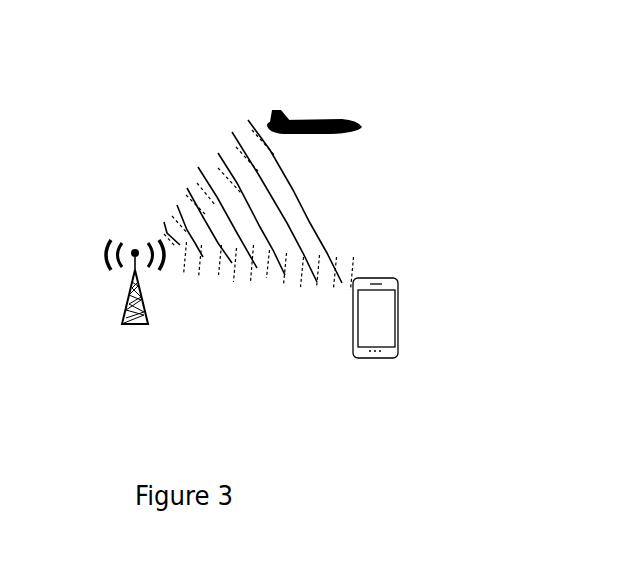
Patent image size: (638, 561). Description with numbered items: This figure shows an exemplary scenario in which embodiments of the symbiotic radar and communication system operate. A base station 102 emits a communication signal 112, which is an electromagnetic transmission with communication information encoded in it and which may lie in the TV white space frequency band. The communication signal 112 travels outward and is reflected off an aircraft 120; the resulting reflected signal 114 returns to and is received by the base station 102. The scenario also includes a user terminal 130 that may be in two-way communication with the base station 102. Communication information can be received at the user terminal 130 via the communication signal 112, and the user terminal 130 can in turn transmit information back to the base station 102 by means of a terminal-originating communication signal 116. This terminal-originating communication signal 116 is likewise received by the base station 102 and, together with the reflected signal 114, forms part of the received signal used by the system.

The base station 102 is at (120, 374).
The communication signal 112 is at (302, 206).
The reflected signal 114 is at (205, 213).
The terminal-originating communication signal 116 is at (215, 272).
The aircraft 120 is at (349, 121).
The user terminal 130 is at (400, 337).